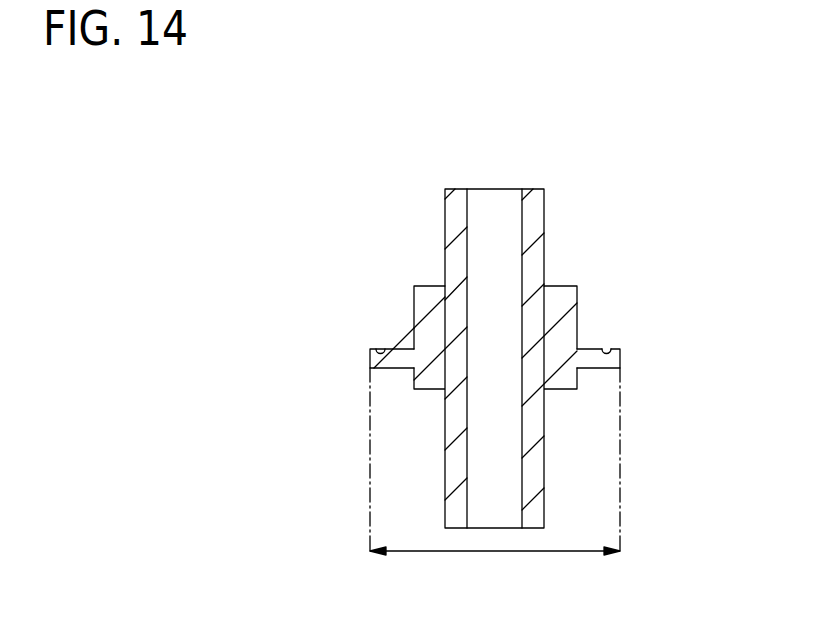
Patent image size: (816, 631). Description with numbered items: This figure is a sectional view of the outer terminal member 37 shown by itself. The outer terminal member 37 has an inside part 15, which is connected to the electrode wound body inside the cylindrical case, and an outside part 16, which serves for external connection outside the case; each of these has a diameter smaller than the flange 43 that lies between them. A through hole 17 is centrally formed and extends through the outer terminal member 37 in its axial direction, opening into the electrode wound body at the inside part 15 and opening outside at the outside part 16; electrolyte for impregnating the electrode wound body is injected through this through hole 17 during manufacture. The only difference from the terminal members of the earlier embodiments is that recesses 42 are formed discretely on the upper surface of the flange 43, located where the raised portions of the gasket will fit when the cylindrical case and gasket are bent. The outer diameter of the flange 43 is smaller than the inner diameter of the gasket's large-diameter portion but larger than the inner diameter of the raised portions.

The inside part 15 is at (448, 463).
The outside part 16 is at (460, 190).
The through hole 17 is at (505, 190).
The outer terminal member 37 is at (628, 242).
The recesses 42 is at (385, 352).
The flange 43 is at (370, 357).